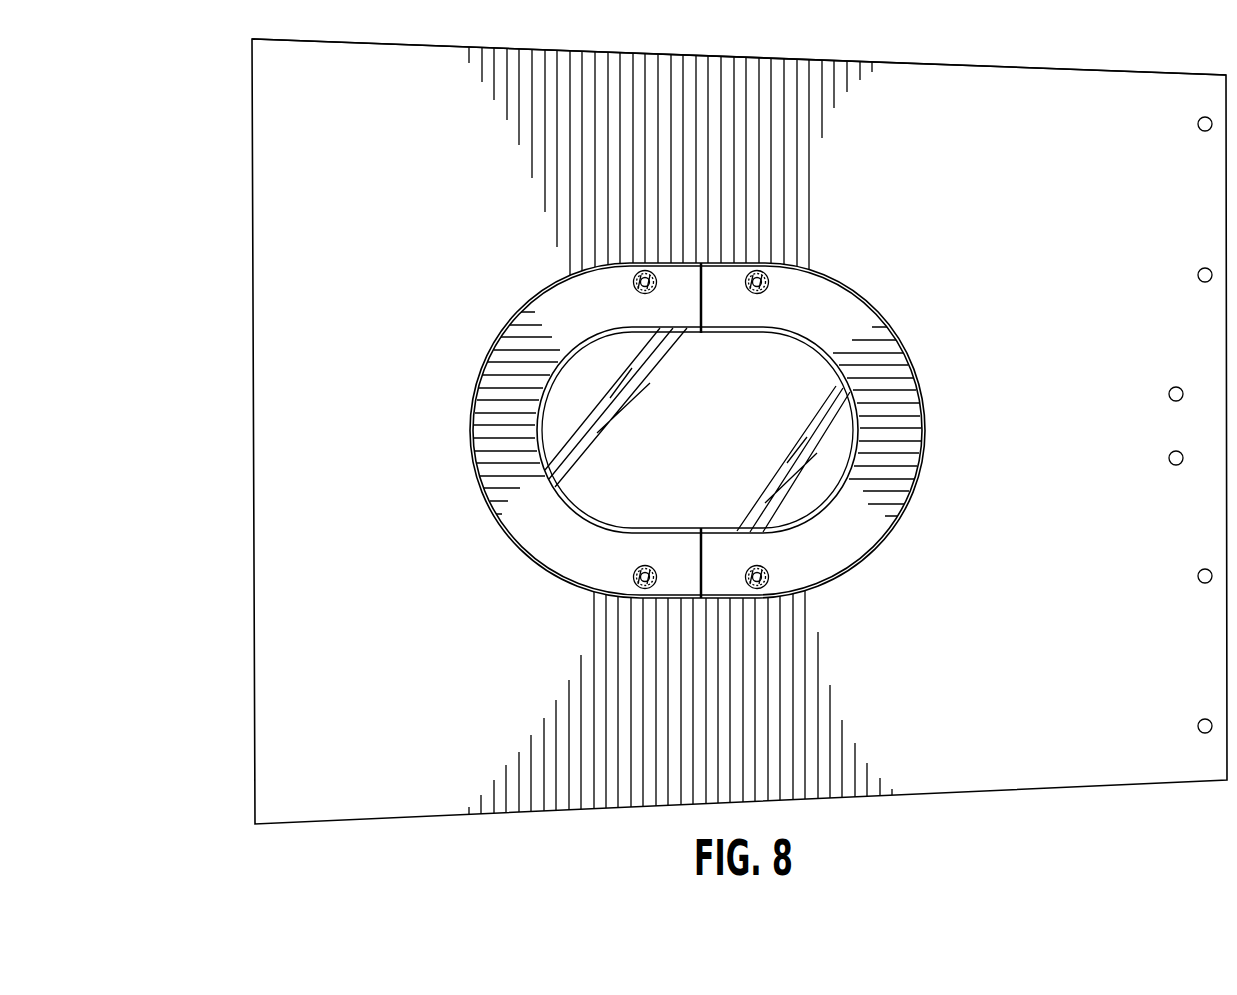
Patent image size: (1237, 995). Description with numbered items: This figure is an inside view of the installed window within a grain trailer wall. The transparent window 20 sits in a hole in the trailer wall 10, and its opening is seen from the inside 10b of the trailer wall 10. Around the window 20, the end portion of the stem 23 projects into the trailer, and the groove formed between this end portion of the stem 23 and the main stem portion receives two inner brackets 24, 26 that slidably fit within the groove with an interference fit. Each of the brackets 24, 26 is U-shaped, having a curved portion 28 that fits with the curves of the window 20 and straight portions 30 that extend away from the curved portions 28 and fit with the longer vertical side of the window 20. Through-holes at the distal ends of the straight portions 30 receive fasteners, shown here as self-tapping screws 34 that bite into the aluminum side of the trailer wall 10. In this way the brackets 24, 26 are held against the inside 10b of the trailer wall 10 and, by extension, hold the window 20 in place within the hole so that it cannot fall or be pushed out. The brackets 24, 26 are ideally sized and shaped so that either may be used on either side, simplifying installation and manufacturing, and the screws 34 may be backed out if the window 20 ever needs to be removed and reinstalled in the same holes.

The trailer wall 10 is at (273, 78).
The inside of the trailer wall 10b is at (1013, 85).
The transparent window 20 is at (784, 368).
The end portion of the stem 23 is at (808, 518).
The inner bracket 24 is at (564, 568).
The inner bracket 26 is at (816, 567).
The curved portion 28 is at (497, 418).
The straight portion 30 is at (720, 278).
The self-tapping screw 34 is at (632, 283).